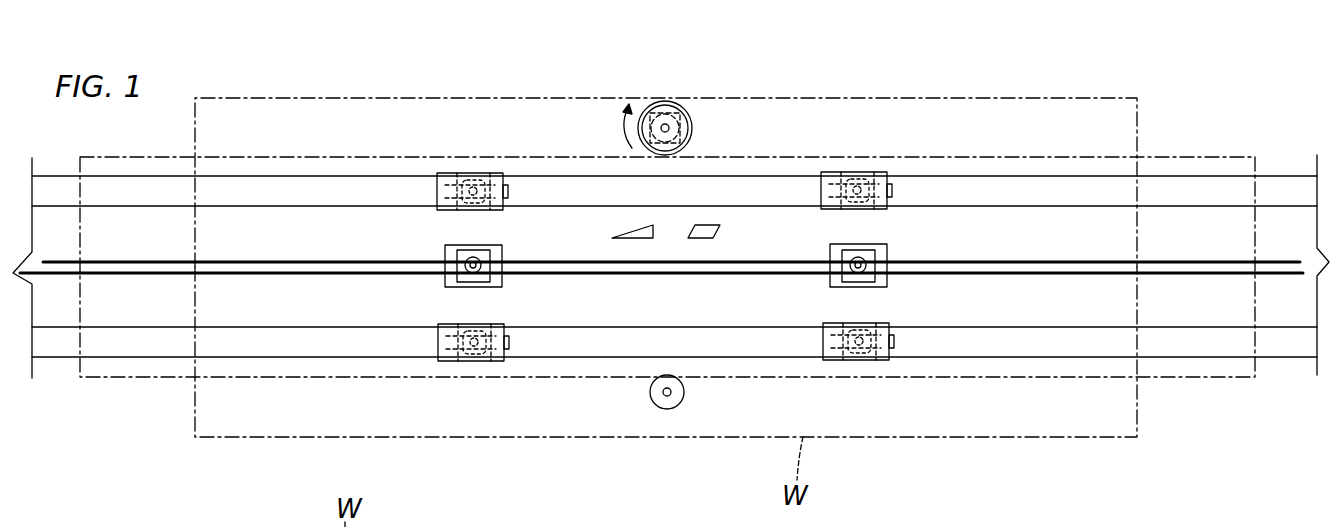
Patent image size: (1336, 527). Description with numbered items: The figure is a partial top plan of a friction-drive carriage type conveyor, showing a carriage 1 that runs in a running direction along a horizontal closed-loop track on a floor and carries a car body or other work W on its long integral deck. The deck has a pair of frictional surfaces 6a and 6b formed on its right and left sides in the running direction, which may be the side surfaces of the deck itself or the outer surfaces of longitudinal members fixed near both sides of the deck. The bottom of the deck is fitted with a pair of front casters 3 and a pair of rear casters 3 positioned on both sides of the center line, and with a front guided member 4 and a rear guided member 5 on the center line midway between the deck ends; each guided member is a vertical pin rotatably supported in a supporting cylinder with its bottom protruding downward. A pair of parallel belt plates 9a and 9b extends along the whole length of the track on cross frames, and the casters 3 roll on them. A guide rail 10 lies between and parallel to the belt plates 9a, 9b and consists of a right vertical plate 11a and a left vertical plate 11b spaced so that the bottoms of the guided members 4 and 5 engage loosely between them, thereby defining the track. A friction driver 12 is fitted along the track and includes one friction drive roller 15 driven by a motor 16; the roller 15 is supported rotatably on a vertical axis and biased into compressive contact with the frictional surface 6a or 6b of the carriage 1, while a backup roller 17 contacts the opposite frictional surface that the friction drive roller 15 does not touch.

The carriage 1 is at (144, 382).
The casters 3 is at (508, 191).
The front guided member 4 is at (470, 266).
The rear guided member 5 is at (865, 266).
The frictional surface 6a is at (467, 157).
The frictional surface 6b is at (403, 378).
The belt plate 9a is at (1030, 188).
The belt plate 9b is at (1063, 340).
The guide rail 10 is at (671, 246).
The right vertical plate 11a is at (343, 259).
The left vertical plate 11b is at (346, 276).
The friction driver 12 is at (704, 90).
The friction drive roller 15 is at (645, 105).
The motor 16 is at (680, 128).
The backup roller 17 is at (668, 410).